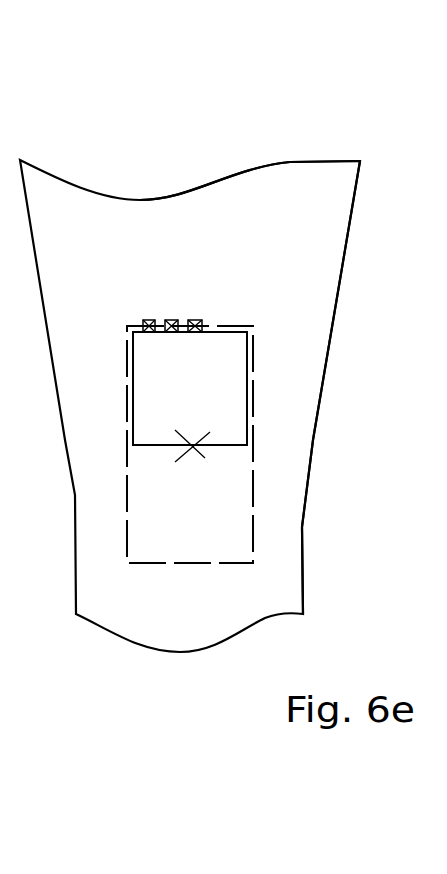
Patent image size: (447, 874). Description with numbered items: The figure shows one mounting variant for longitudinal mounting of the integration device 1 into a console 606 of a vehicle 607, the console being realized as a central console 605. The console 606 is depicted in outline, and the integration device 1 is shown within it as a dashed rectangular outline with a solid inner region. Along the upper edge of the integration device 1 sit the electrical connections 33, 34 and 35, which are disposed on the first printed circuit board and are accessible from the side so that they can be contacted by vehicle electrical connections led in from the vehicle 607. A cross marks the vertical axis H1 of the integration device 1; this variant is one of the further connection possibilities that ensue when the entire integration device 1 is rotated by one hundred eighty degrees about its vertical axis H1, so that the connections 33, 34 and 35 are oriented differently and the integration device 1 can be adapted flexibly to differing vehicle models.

The vehicle 607 is at (87, 117).
The central console 605 is at (302, 160).
The console 606 is at (256, 165).
The integration device 1 is at (253, 537).
The electrical connection 33 is at (193, 320).
The electrical connection 34 is at (171, 320).
The electrical connection 35 is at (152, 320).
The vertical axis H1 is at (193, 450).